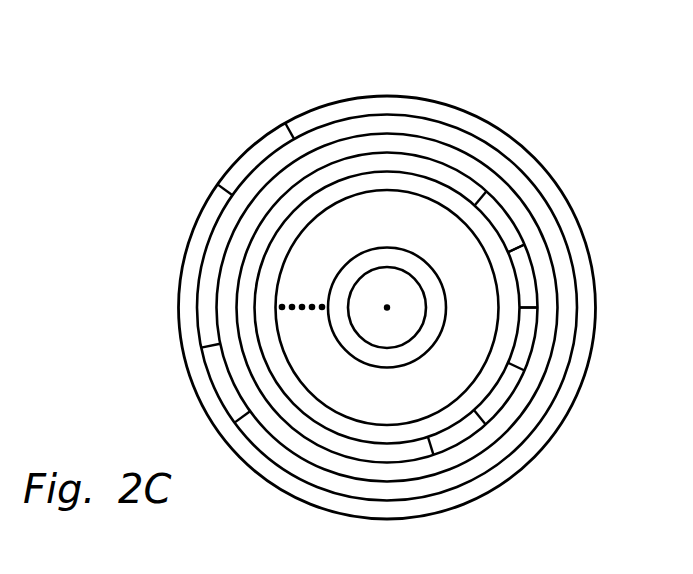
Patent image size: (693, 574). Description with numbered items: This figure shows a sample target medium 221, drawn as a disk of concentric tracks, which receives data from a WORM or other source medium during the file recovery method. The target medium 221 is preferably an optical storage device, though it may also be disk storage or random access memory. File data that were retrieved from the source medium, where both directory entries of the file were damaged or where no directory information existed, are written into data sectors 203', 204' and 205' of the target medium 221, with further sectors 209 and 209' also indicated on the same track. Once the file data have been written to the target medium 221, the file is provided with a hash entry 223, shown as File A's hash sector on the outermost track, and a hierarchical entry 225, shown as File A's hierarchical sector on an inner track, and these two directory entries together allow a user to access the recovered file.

The data sector 203' is at (463, 157).
The data sector 204' is at (509, 170).
The data sector 205' is at (588, 202).
The index sector 209' is at (533, 277).
The index sector 209 is at (455, 6).
The target medium 221 is at (530, 508).
The hash entry 223 is at (254, 156).
The hierarchical entry 225 is at (222, 385).